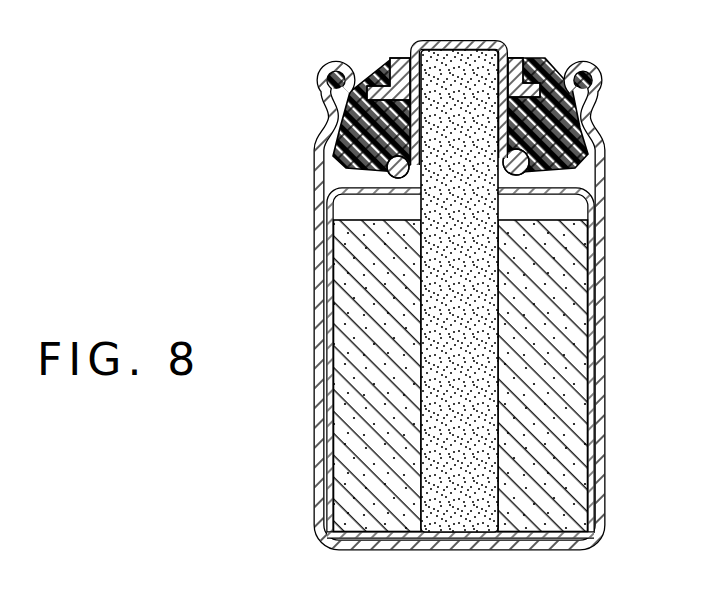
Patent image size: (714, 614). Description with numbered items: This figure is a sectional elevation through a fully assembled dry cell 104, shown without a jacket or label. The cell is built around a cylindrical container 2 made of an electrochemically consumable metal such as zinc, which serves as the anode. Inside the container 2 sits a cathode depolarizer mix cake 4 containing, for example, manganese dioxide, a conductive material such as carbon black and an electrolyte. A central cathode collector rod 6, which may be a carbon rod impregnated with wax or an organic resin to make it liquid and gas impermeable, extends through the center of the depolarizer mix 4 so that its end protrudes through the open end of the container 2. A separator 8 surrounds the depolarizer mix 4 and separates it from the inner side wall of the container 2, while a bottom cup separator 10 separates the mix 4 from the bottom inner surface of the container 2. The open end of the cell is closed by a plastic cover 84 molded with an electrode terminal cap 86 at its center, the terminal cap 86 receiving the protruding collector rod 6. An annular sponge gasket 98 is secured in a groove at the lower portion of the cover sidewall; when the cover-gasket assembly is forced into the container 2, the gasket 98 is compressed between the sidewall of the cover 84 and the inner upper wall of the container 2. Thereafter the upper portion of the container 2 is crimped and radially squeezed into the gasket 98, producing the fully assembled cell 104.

The cylindrical container 2 is at (598, 226).
The cathode depolarizer mix cake 4 is at (575, 278).
The cathode collector rod 6 is at (459, 67).
The separator 8 is at (582, 187).
The bottom cup separator 10 is at (594, 531).
The cover 84 is at (535, 64).
The electrode terminal cap 86 is at (416, 46).
The annular sponge gasket 98 is at (601, 92).
The fully assembled cell 104 is at (302, 138).